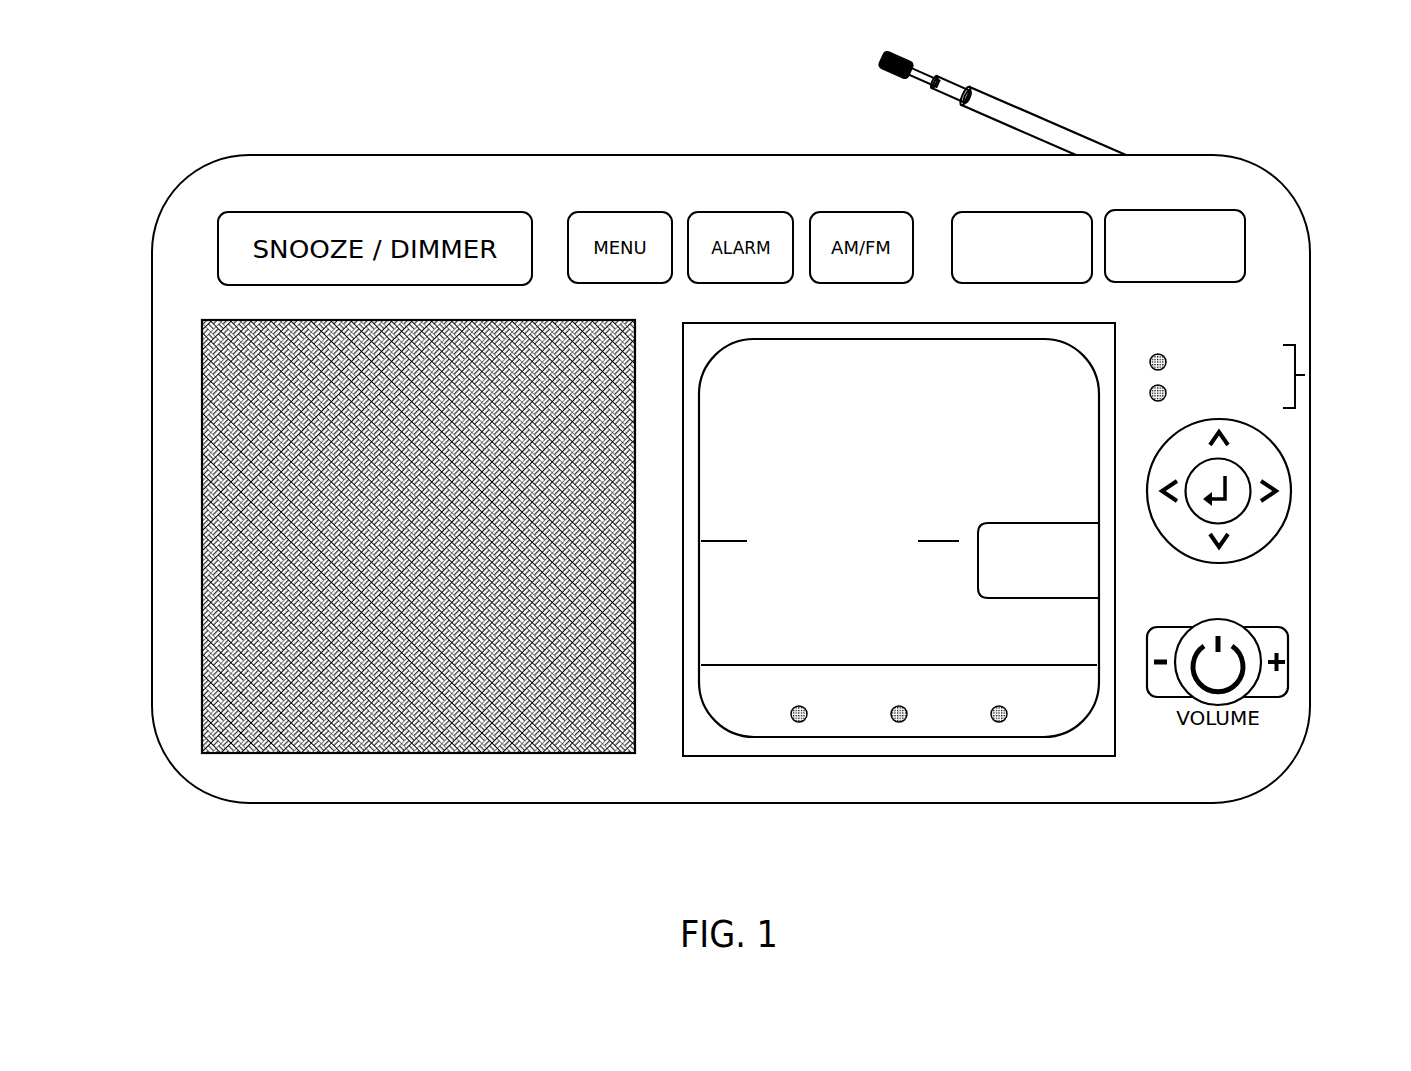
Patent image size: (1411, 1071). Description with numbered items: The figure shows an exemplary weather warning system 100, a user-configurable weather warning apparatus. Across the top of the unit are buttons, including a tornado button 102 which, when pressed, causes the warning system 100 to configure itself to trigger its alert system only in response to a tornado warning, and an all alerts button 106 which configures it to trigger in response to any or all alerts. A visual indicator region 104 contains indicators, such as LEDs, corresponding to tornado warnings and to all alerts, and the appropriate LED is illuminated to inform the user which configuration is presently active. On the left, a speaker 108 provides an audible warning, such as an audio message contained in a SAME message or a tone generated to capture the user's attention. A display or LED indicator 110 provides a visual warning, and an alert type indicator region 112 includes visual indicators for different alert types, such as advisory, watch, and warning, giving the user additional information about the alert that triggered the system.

The warning system 100 is at (362, 108).
The tornado button 102 is at (983, 212).
The visual indicator region 104 is at (1305, 375).
The all alerts button 106 is at (1212, 210).
The speaker 108 is at (200, 594).
The display or LED indicator 110 is at (748, 580).
The alert type indicator region 112 is at (869, 598).